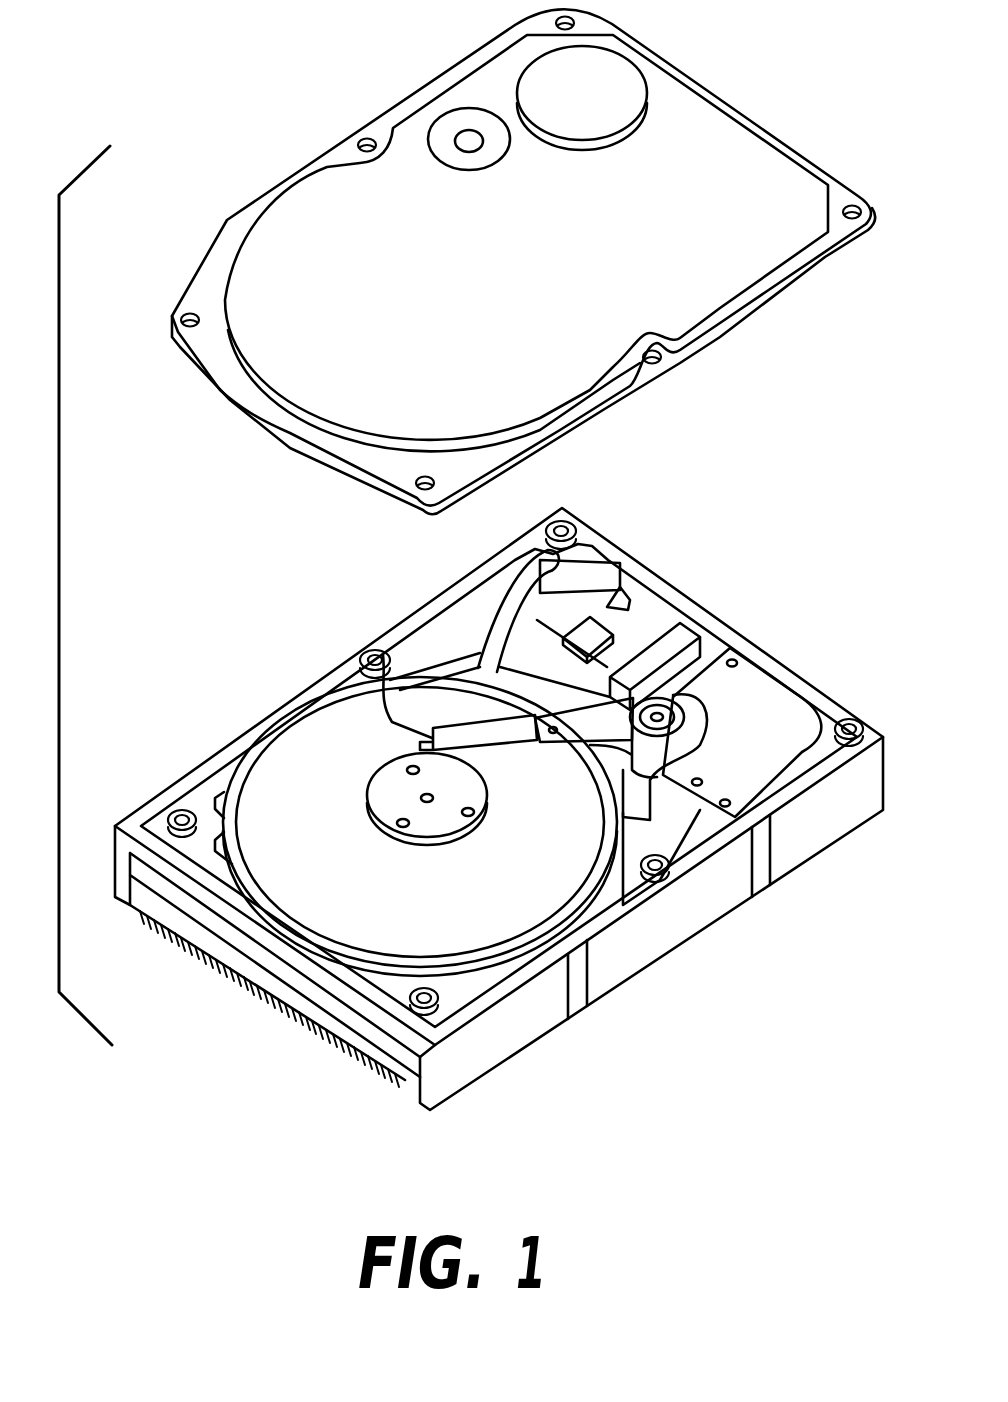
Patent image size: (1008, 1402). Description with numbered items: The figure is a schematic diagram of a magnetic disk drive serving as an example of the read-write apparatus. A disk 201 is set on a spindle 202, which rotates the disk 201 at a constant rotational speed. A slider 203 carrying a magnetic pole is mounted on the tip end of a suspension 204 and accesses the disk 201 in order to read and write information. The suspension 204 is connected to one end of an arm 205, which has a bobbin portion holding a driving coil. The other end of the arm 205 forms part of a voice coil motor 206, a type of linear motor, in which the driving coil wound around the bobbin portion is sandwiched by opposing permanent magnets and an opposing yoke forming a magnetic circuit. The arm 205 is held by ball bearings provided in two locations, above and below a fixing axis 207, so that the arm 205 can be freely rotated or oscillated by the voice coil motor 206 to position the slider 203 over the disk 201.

The disk 201 is at (282, 768).
The spindle 202 is at (385, 802).
The slider 203 is at (383, 655).
The suspension 204 is at (500, 738).
The arm 205 is at (553, 745).
The voice coil motor 206 is at (770, 722).
The fixing axis 207 is at (657, 716).